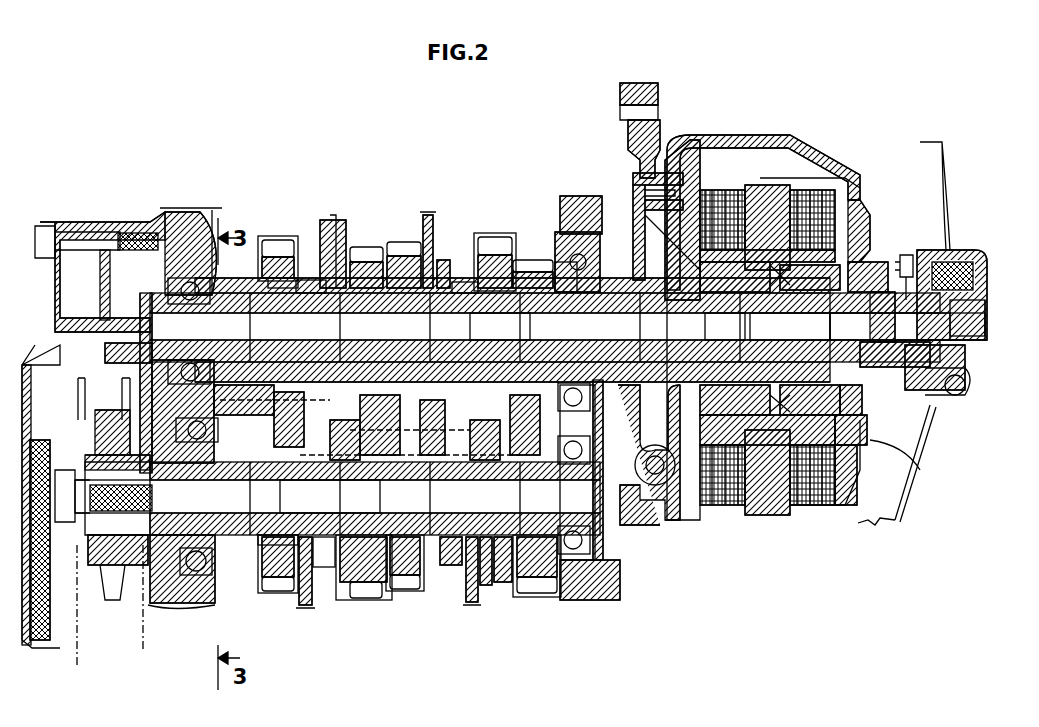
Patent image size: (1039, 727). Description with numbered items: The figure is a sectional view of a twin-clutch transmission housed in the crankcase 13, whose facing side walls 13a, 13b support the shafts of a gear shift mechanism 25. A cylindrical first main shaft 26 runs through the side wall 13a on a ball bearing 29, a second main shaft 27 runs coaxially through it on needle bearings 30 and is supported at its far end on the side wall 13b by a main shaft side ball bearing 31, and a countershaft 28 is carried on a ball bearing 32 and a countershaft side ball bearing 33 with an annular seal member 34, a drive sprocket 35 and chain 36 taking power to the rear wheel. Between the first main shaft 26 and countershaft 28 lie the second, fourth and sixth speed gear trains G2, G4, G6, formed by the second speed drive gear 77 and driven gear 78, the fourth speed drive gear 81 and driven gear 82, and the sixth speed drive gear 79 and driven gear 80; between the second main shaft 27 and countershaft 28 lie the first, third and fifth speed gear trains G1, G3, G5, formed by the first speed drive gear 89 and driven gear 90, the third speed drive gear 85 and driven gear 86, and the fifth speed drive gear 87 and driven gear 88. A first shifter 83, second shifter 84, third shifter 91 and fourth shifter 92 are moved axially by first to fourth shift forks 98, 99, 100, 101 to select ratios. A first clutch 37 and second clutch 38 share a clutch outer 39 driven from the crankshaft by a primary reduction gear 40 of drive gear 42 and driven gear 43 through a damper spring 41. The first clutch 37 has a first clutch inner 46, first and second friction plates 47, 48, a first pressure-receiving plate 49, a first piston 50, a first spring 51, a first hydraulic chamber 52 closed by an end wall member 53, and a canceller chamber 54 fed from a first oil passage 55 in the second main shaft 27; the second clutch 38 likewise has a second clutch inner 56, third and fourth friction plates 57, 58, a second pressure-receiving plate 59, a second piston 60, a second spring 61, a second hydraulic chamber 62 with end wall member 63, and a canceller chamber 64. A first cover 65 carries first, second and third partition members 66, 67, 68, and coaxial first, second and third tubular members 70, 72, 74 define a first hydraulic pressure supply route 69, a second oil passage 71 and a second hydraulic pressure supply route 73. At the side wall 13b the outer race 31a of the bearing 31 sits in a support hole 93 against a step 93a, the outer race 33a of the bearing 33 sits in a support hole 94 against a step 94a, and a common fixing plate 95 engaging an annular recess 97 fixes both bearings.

The crankcase 13 is at (158, 218).
The side wall 13a is at (580, 196).
The side wall 13b is at (180, 212).
The gear shift mechanism 25 is at (560, 262).
The first main shaft 26 is at (465, 282).
The second main shaft 27 is at (305, 280).
The countershaft 28 is at (490, 586).
The ball bearing 29 is at (575, 232).
The needle bearings 30 is at (420, 300).
The main shaft side ball bearing 31 is at (148, 298).
The outer race 31a is at (140, 372).
The ball bearing 32 is at (608, 595).
The countershaft side ball bearing 33 is at (190, 470).
The outer race 33a is at (314, 496).
The annular seal member 34 is at (118, 600).
The drive sprocket 35 is at (95, 440).
The chain 36 is at (75, 650).
The first clutch 37 is at (762, 185).
The second clutch 38 is at (862, 180).
The clutch outer 39 is at (728, 140).
The primary reduction gear 40 is at (660, 112).
The damper spring 41 is at (685, 520).
The drive gear 42 is at (618, 96).
The driven gear 43 is at (632, 128).
The first clutch inner 46 is at (760, 326).
The first friction plates 47 is at (720, 190).
The second friction plates 48 is at (722, 505).
The first pressure-receiving plate 49 is at (690, 190).
The first piston 50 is at (795, 185).
The first spring 51 is at (638, 198).
The first hydraulic chamber 52 is at (870, 262).
The end wall member 53 is at (862, 215).
The canceller chamber 54 is at (782, 178).
The first oil passage 55 is at (500, 326).
The second clutch inner 56 is at (890, 326).
The third friction plates 57 is at (825, 190).
The fourth friction plates 58 is at (810, 505).
The second pressure-receiving plate 59 is at (770, 505).
The second piston 60 is at (868, 522).
The second spring 61 is at (862, 410).
The second hydraulic chamber 62 is at (867, 432).
The end wall member 63 is at (920, 470).
The canceller chamber 64 is at (860, 465).
The first cover 65 is at (947, 190).
The first partition member 66 is at (960, 348).
The second partition member 67 is at (945, 252).
The third partition member 68 is at (940, 405).
The first hydraulic pressure supply route 69 is at (740, 326).
The first tubular member 70 is at (876, 292).
The second oil passage 71 is at (975, 295).
The second tubular member 72 is at (895, 372).
The second hydraulic pressure supply route 73 is at (960, 398).
The third tubular member 74 is at (908, 255).
The second speed drive gear 77 is at (530, 260).
The second speed driven gear 78 is at (540, 595).
The sixth speed drive gear 79 is at (490, 238).
The sixth speed driven gear 80 is at (512, 582).
The fourth speed drive gear 81 is at (405, 242).
The fourth speed driven gear 82 is at (410, 590).
The first shifter 83 is at (449, 570).
The second shifter 84 is at (443, 260).
The third speed drive gear 85 is at (368, 248).
The third speed driven gear 86 is at (368, 598).
The fifth speed drive gear 87 is at (288, 278).
The fifth speed driven gear 88 is at (278, 592).
The first speed drive gear 89 is at (267, 242).
The first speed driven gear 90 is at (270, 596).
The third shifter 91 is at (333, 220).
The fourth shifter 92 is at (318, 560).
The support hole 93 is at (205, 290).
The step 93a is at (213, 210).
The support hole 94 is at (185, 605).
The step 94a is at (160, 608).
The fixing plate 95 is at (222, 385).
The annular recess 97 is at (210, 605).
The first shift fork 98 is at (475, 605).
The second shift fork 99 is at (427, 215).
The third shift fork 100 is at (333, 215).
The fourth shift fork 101 is at (325, 570).
The first speed gear train G1 is at (258, 595).
The second speed gear train G2 is at (555, 598).
The third speed gear train G3 is at (366, 602).
The fourth speed gear train G4 is at (408, 592).
The fifth speed gear train G5 is at (278, 238).
The sixth speed gear train G6 is at (500, 230).